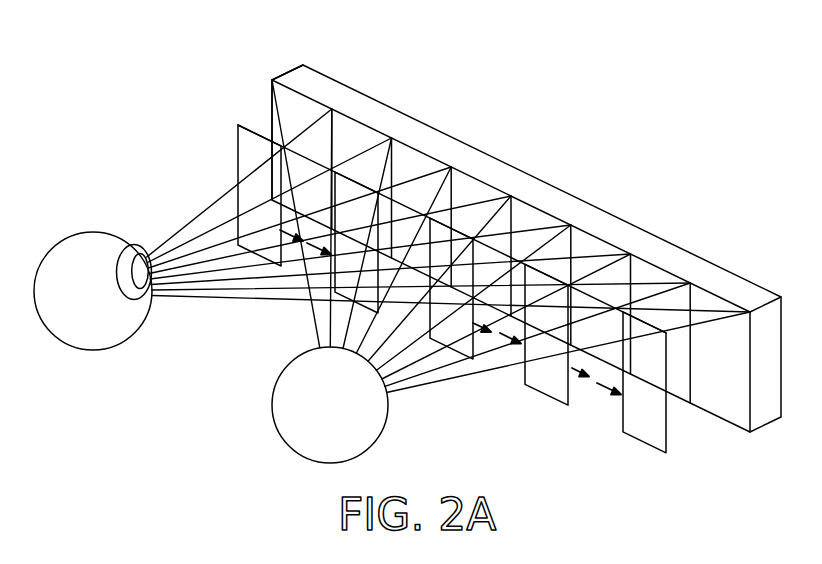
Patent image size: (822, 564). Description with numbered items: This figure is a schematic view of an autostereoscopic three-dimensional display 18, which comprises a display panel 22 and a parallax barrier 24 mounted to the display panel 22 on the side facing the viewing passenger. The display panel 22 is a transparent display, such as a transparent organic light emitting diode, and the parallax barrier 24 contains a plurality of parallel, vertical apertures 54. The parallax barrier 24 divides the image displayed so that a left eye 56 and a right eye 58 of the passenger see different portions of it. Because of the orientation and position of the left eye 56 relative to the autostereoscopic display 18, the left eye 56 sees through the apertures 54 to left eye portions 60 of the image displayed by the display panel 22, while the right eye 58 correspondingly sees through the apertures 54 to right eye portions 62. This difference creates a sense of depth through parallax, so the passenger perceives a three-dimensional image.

The autostereoscopic three-dimensional display 18 is at (606, 207).
The display panel 22 is at (297, 77).
The parallax barrier 24 is at (250, 145).
The parallel vertical apertures 54 is at (310, 243).
The left eye 56 is at (103, 333).
The right eye 58 is at (297, 414).
The left eye portions 60 is at (380, 115).
The right eye portions 62 is at (323, 87).